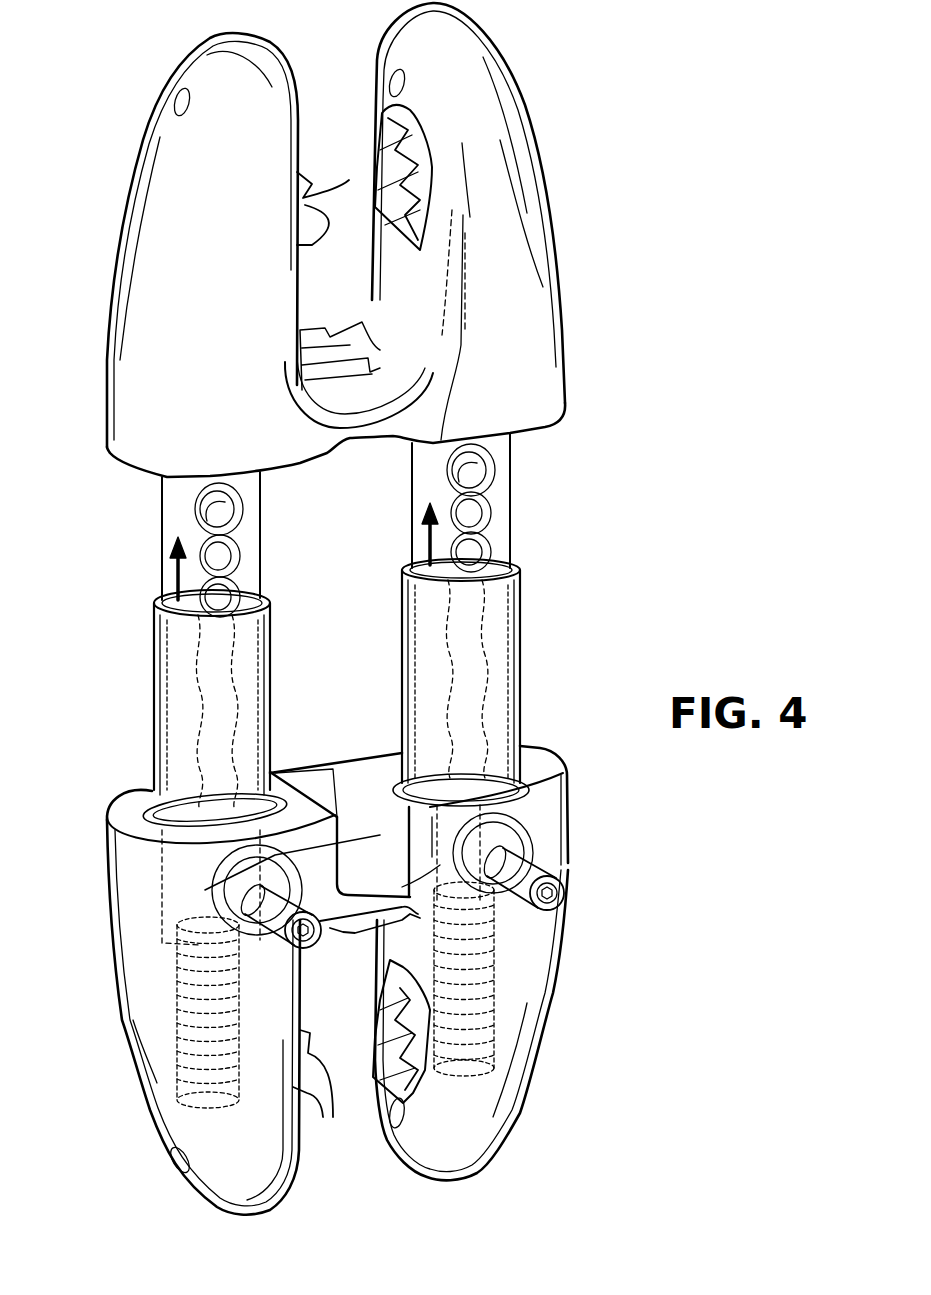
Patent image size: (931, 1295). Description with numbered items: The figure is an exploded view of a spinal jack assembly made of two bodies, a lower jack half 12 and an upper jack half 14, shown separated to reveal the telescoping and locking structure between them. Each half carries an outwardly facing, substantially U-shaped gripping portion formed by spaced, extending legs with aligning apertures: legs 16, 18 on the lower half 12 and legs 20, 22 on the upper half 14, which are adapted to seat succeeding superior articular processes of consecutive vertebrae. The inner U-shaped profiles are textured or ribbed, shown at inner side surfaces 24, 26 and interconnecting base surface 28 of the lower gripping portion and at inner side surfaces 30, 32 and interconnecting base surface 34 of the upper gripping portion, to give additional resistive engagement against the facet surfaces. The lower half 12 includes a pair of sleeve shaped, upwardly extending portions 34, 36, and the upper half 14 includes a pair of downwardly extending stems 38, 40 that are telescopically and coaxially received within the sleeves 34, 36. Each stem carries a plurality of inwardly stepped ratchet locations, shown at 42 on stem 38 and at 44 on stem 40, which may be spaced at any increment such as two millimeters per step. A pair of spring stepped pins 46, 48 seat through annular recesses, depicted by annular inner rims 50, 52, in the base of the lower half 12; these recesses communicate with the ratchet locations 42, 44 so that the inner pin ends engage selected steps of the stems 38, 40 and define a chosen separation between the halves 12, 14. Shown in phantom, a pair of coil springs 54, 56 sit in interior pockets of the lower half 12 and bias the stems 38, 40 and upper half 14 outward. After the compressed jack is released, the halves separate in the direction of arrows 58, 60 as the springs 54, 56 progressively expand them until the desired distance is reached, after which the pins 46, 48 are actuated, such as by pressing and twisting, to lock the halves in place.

The first body 12 is at (525, 960).
The second body 14 is at (533, 358).
The leg 16 is at (222, 1188).
The leg 18 is at (487, 1140).
The leg 20 is at (178, 210).
The leg 22 is at (500, 163).
The inner side surface 24 is at (316, 1082).
The inner side surface 26 is at (380, 1058).
The interconnecting base surface 28 is at (356, 936).
The inner side surface 30 is at (312, 232).
The inner side surface 32 is at (403, 127).
The sleeve shaped upwardly extending portion 34 is at (272, 655).
The sleeve shaped upwardly extending portion 36 is at (512, 612).
The stem 38 is at (173, 518).
The stem 40 is at (425, 468).
The ratchet locations 42 is at (230, 557).
The ratchet locations 44 is at (484, 520).
The spring stepped pin 46 is at (288, 887).
The spring stepped pin 48 is at (563, 888).
The annular inner rim 50 is at (288, 897).
The annular inner rim 52 is at (507, 853).
The coil spring 54 is at (178, 1013).
The coil spring 56 is at (500, 1010).
The directional arrow 58 is at (172, 563).
The directional arrow 60 is at (428, 530).